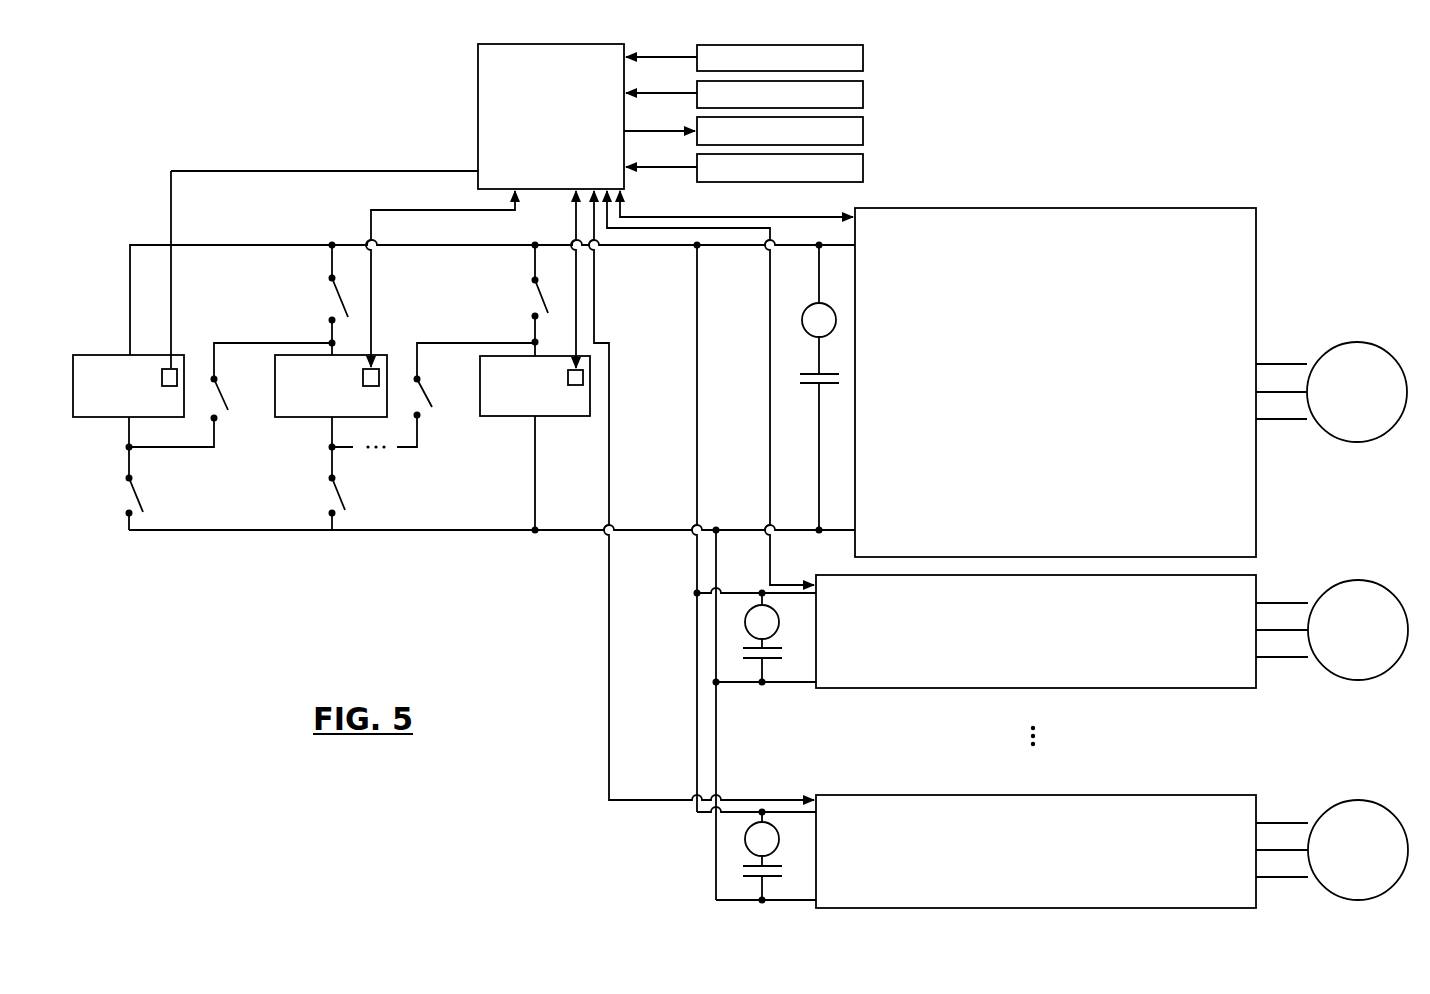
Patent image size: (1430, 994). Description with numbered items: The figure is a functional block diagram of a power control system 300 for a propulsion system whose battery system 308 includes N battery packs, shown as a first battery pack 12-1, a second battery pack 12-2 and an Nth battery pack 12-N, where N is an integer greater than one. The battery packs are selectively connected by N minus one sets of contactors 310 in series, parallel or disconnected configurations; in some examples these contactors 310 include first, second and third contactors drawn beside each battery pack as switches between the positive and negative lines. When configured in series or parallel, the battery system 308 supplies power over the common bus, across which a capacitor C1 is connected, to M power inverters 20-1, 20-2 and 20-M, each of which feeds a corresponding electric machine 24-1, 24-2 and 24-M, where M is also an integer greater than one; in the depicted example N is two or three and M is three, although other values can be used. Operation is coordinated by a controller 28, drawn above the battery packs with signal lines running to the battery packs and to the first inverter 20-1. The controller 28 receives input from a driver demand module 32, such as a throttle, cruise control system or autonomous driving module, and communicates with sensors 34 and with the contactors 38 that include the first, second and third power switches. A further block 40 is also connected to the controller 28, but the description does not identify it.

The power control system 300 is at (274, 105).
The battery system 308 is at (284, 256).
The sets of contactors 310 is at (241, 301).
The controller 28 is at (477, 112).
The driver demand module 32 is at (863, 58).
The sensors 34 is at (863, 93).
The contactors 38 is at (863, 131).
The memory 40 is at (863, 167).
The first battery pack 12-1 is at (112, 355).
The second battery pack 12-2 is at (285, 355).
The Nth battery pack 12-N is at (497, 356).
The capacitor C1 is at (814, 387).
The first power inverter 20-1 is at (1257, 240).
The second power inverter 20-2 is at (1258, 592).
The Mth power inverter 20-M is at (1258, 812).
The first electric machine 24-1 is at (1365, 342).
The second electric machine 24-2 is at (1360, 580).
The Mth electric machine 24-M is at (1360, 800).